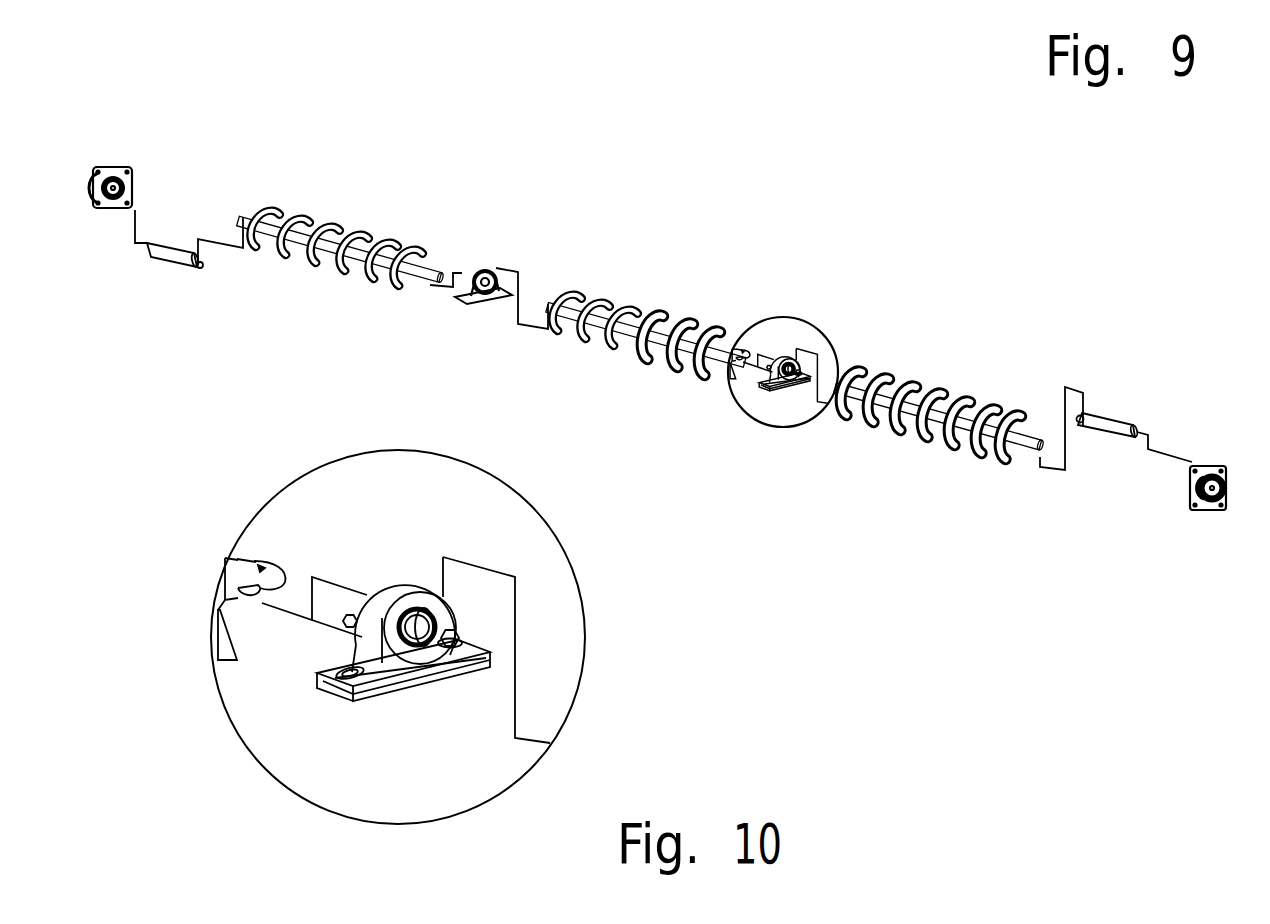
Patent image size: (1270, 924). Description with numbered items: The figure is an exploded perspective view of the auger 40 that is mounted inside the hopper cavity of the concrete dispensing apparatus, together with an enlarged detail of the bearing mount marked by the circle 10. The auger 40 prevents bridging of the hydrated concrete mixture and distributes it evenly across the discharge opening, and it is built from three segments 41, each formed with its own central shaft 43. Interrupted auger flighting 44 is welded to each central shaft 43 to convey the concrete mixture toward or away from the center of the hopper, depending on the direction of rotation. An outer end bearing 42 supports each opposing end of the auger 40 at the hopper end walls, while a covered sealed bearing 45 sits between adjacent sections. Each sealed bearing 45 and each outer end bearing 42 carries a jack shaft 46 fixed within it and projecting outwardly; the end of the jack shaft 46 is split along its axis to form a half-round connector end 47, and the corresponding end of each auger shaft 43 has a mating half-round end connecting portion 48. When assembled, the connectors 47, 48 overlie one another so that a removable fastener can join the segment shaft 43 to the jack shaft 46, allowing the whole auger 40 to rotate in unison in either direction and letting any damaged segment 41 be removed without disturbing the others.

In FIG. 9, the circle 10 is at (828, 322).
In FIG. 9, the auger 40 is at (779, 208).
In FIG. 10, the auger 40 is at (384, 650).
In FIG. 9, the segment 41 is at (633, 327).
In FIG. 9, the outer end bearing 42 is at (118, 167).
In FIG. 9, the central shaft 43 is at (632, 328).
In FIG. 10, the central shaft 43 is at (237, 575).
In FIG. 9, the auger flighting 44 is at (400, 284).
In FIG. 9, the covered sealed bearing 45 is at (480, 277).
In FIG. 10, the covered sealed bearing 45 is at (384, 587).
In FIG. 9, the jack shaft 46 is at (170, 260).
In FIG. 10, the jack shaft 46 is at (413, 633).
In FIG. 9, the half-round connector end 47 is at (196, 264).
In FIG. 10, the half-round connector end 47 is at (348, 617).
In FIG. 9, the half-round end connecting portion 48 is at (240, 213).
In FIG. 10, the half-round end connecting portion 48 is at (257, 567).